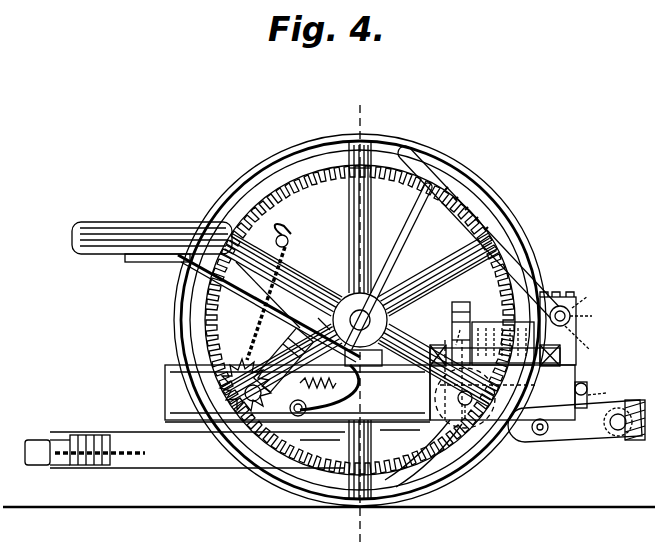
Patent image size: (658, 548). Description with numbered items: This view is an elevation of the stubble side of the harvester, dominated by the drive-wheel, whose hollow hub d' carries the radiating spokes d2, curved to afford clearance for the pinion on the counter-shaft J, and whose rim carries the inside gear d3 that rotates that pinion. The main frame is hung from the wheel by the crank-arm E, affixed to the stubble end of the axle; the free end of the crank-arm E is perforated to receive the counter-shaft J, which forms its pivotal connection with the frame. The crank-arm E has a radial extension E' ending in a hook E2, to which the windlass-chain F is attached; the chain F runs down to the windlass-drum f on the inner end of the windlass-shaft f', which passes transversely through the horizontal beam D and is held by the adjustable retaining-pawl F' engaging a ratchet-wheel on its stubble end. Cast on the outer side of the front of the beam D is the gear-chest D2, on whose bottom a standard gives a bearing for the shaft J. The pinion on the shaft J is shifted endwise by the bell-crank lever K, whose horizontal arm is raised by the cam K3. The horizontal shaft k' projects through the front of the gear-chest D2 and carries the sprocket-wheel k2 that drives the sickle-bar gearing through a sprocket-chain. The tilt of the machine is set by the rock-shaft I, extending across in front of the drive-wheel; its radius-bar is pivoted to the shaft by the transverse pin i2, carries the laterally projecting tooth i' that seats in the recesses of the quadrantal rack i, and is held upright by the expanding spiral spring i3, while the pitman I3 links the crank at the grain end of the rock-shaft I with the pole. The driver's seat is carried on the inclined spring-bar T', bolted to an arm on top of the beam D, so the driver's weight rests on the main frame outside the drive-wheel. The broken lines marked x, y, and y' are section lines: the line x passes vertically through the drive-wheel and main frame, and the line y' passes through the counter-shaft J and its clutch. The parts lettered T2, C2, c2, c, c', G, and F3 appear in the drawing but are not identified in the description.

The section line x is at (357, 317).
The inside gear d3 is at (360, 320).
The spokes d2 is at (357, 321).
The hollow hub d' is at (359, 320).
The inclined spring-bar T' is at (152, 233).
The lever arm T2 is at (282, 326).
The crank-arm E is at (388, 274).
The radial extension E' is at (280, 295).
The hook E2 is at (276, 286).
The rock-shaft I is at (481, 234).
The quadrantal rack i is at (560, 300).
The expanding spiral spring i3 is at (586, 293).
The transverse pin i2 is at (587, 314).
The tooth i' is at (582, 344).
The bell-crank lever K is at (514, 327).
The cam K3 is at (503, 336).
The section line y is at (459, 328).
The section line y' is at (462, 418).
The horizontal beam D is at (362, 377).
The gear-chest D2 is at (502, 380).
The counter-shaft J is at (465, 396).
The sprocket-wheel k2 is at (587, 382).
The horizontal shaft k' is at (596, 395).
The pitman I3 is at (575, 421).
The support block C2 is at (637, 413).
The curved arm c2 is at (423, 453).
The frame member c is at (389, 456).
The frame member c' is at (320, 448).
The rod G is at (227, 445).
The windlass-drum f is at (238, 386).
The windlass-shaft f' is at (298, 408).
The adjustable retaining-pawl F' is at (329, 387).
The windlass-chain F is at (276, 357).
The link F3 is at (323, 316).